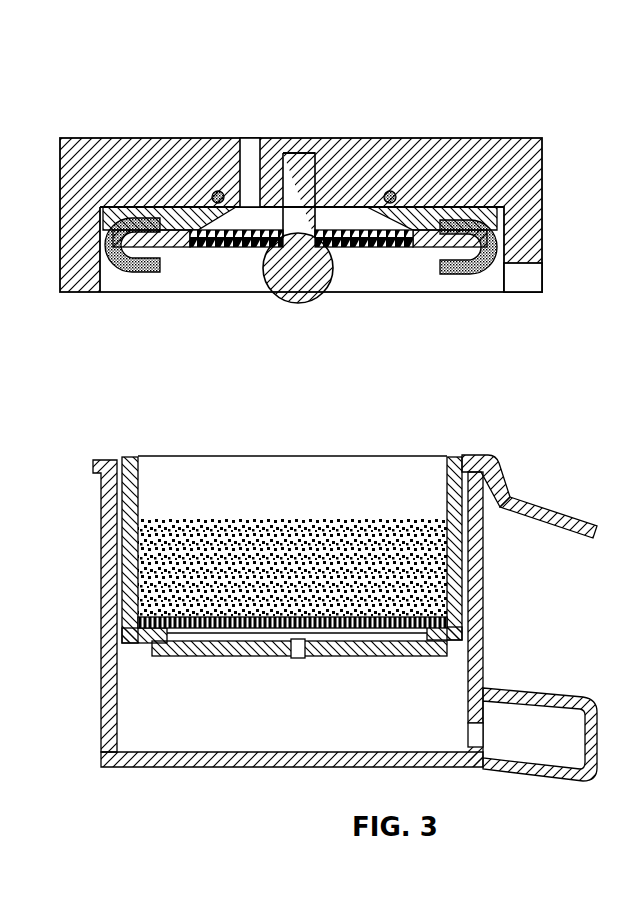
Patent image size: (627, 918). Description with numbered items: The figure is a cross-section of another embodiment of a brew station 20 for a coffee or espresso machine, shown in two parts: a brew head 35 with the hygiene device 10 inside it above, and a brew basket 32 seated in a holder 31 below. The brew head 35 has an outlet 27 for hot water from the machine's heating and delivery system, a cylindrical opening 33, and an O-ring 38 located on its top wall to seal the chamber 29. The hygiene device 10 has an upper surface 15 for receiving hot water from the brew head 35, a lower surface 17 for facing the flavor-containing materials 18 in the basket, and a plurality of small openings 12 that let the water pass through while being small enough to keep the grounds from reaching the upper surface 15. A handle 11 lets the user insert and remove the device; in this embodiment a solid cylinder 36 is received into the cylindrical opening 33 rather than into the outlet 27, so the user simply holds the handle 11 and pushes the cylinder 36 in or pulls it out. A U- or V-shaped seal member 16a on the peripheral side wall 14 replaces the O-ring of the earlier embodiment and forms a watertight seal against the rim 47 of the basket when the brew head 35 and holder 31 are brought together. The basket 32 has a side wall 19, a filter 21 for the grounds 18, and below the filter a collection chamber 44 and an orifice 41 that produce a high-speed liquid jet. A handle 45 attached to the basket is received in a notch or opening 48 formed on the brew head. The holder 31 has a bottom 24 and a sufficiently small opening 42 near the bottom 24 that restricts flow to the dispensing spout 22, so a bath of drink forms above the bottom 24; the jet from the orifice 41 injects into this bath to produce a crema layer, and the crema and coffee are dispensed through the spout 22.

The brew station 20 is at (108, 104).
The upper surface 15 is at (212, 191).
The outlet 27 is at (242, 138).
The cylinder 36 is at (287, 152).
The cylindrical opening 33 is at (311, 152).
The chamber 29 is at (348, 208).
The O-ring 38 is at (396, 191).
The brew head 35 is at (476, 128).
The peripheral side wall 14 is at (500, 237).
The notch or opening 48 is at (520, 277).
The U- or V-shaped seal member 16a is at (125, 270).
The lower surface 17 is at (216, 248).
The hygiene device 10 is at (250, 292).
The handle 11 is at (326, 296).
The small openings 12 is at (378, 248).
The rim 47 is at (481, 455).
The handle 45 is at (543, 508).
The holder 31 is at (496, 588).
The side wall 19 is at (138, 499).
The flavor-containing materials 18 is at (248, 522).
The brew basket 32 is at (180, 668).
The orifice 41 is at (296, 658).
The chamber 44 is at (321, 636).
The filter 21 is at (372, 629).
The bottom 24 is at (222, 752).
The dispensing spout 22 is at (545, 722).
The opening 42 is at (468, 735).